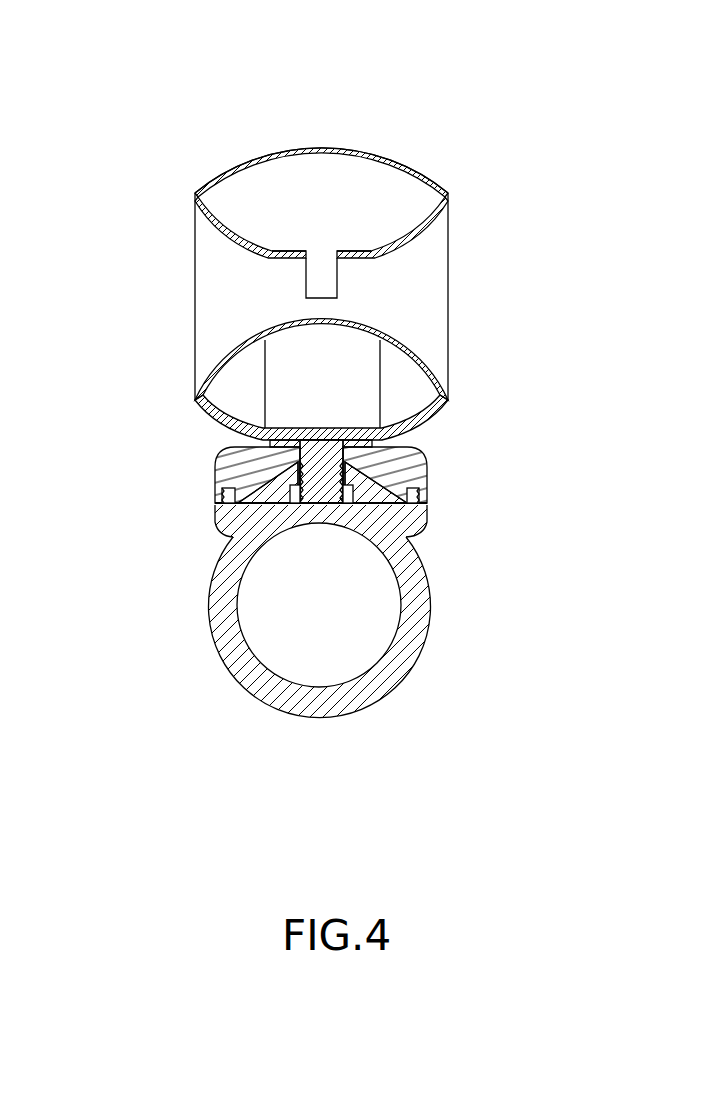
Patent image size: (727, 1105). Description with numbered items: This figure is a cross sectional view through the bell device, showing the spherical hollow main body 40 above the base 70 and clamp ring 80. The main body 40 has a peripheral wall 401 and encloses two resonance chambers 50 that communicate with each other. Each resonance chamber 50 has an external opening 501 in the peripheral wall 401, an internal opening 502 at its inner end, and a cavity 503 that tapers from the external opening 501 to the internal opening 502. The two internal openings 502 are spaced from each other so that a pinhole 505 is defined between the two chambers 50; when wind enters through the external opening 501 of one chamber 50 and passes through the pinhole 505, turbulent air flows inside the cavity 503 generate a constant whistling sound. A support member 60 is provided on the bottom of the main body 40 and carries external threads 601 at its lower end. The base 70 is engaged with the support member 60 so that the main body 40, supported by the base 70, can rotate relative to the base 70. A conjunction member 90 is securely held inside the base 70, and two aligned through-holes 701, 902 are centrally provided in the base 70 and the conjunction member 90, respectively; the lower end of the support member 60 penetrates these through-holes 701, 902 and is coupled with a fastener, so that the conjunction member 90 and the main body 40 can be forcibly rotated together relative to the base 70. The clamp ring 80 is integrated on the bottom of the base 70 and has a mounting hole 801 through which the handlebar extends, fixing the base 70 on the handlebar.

The main body 40 is at (422, 176).
The peripheral wall 401 is at (245, 163).
The internal opening 502 is at (328, 276).
The pinhole 505 is at (320, 257).
The resonance chamber 50 is at (237, 237).
The external opening 501 is at (195, 220).
The cavity 503 is at (240, 287).
The base 70 is at (413, 457).
The through-hole 701 is at (262, 442).
The conjunction member 90 is at (224, 495).
The through-hole 902 is at (420, 487).
The support member 60 is at (217, 477).
The external threads 601 is at (235, 537).
The clamp ring 80 is at (310, 703).
The mounting hole 801 is at (360, 640).